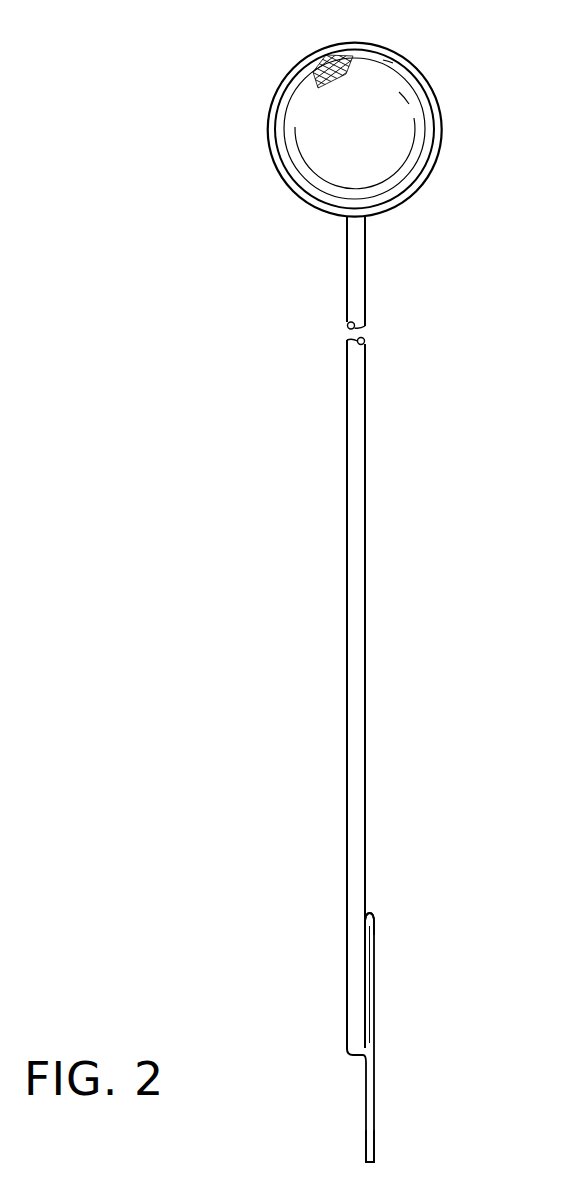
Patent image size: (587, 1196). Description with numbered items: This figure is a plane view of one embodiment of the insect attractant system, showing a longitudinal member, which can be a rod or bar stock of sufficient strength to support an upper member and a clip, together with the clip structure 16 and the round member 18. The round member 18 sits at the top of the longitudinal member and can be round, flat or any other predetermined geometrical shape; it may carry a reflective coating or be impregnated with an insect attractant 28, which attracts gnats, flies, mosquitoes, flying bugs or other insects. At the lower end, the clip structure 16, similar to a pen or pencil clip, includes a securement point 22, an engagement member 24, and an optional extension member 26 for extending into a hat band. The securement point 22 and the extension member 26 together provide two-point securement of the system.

The clip structure 16 is at (402, 984).
The round member 18 is at (295, 100).
The securement point 22 is at (367, 1047).
The engagement member 24 is at (375, 923).
The extension member 26 is at (374, 1137).
The insect attractant 28 is at (350, 64).